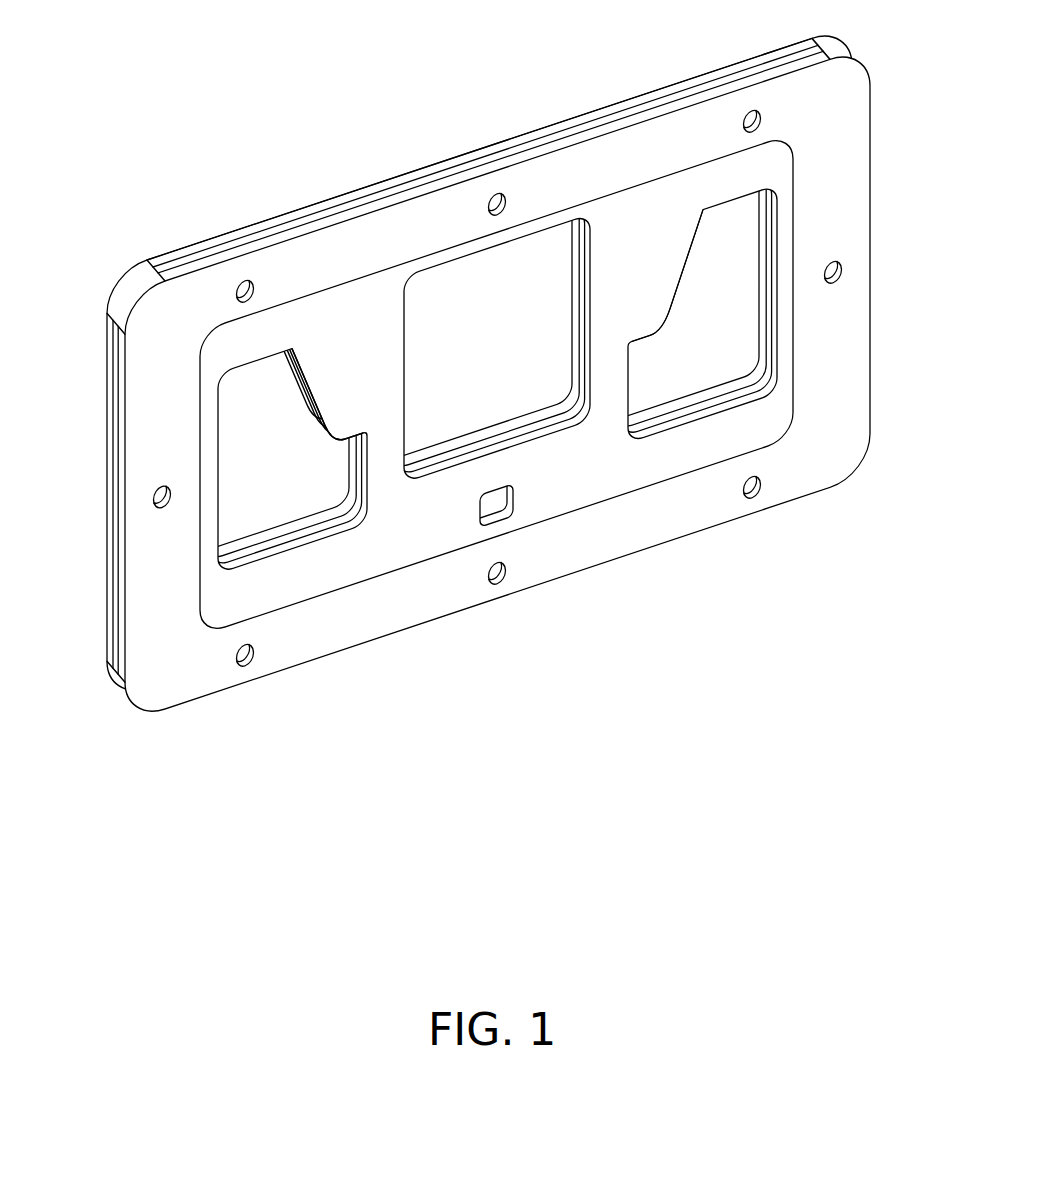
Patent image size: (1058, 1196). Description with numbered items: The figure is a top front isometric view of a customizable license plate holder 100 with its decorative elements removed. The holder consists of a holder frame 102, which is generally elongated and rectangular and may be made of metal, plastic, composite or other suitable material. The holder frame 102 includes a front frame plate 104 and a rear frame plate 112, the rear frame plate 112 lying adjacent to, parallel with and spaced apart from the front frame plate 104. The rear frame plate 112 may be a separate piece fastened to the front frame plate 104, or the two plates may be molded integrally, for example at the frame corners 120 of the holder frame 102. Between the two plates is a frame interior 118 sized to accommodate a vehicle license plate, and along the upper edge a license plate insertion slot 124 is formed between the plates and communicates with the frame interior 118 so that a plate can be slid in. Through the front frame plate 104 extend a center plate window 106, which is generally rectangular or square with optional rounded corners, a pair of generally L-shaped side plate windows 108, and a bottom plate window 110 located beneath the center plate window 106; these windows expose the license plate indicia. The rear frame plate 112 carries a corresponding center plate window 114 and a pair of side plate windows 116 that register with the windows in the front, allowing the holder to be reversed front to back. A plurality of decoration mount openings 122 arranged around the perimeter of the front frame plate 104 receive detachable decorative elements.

The customizable license plate holder 100 is at (490, 379).
The holder frame 102 is at (490, 379).
The front frame plate 104 is at (620, 157).
The center plate window 106 is at (488, 335).
The side plate window 108 is at (488, 395).
The bottom plate window 110 is at (505, 515).
The rear frame plate 112 is at (466, 157).
The center plate window 114 is at (571, 298).
The side plate window 116 is at (348, 480).
The frame interior 118 is at (113, 420).
The frame corner 120 is at (832, 46).
The decoration mount opening 122 is at (506, 202).
The license plate insertion slot 124 is at (540, 140).